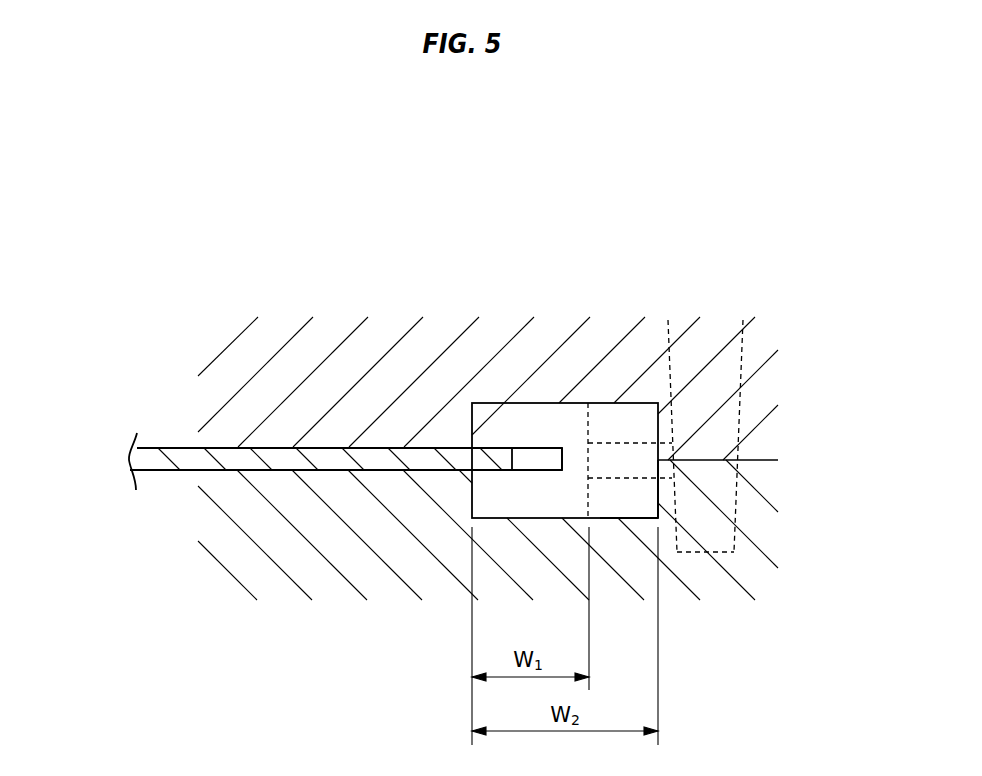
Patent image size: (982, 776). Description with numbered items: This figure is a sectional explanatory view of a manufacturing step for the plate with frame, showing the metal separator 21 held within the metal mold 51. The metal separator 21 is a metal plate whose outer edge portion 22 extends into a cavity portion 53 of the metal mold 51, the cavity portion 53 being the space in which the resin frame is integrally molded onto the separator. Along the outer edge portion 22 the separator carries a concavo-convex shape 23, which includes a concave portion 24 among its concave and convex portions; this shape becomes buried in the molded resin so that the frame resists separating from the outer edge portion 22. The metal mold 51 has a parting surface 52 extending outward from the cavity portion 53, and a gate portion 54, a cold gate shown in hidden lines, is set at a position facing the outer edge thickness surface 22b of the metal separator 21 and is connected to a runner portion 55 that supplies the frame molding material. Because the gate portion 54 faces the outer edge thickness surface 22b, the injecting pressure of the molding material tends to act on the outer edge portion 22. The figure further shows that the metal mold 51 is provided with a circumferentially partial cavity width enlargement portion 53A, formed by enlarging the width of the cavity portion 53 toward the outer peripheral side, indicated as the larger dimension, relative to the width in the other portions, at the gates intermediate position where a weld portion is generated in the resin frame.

The metal separator 21 is at (375, 453).
The outer edge portion 22 is at (495, 460).
The outer edge thickness surface 22b is at (562, 462).
The concavo-convex shape 23 is at (525, 438).
The concave portion 24 is at (547, 457).
The metal mold 51 is at (196, 386).
The parting surface 52 is at (760, 460).
The cavity portion 53 is at (494, 428).
The cavity width enlargement portion 53A is at (640, 498).
The gate portion 54 is at (632, 455).
The runner portion 55 is at (720, 428).